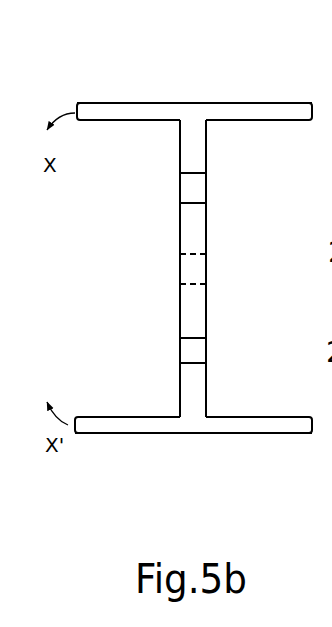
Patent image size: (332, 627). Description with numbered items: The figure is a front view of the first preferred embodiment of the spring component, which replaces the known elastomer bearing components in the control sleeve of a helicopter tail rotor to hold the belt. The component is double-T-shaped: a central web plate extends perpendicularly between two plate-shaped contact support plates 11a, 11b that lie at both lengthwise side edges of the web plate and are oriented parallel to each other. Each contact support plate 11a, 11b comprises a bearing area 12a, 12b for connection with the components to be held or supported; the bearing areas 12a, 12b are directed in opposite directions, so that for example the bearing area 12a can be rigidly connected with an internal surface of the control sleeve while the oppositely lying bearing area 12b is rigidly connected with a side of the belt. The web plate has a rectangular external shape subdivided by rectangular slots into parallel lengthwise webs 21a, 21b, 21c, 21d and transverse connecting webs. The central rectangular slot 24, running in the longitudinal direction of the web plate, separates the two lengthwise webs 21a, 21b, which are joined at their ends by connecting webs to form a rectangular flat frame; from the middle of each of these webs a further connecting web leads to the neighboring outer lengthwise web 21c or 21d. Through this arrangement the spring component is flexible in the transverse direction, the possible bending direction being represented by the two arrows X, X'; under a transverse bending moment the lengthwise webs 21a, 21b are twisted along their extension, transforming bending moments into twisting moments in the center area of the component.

The contact support plate 11a is at (141, 115).
The bearing area 12a is at (227, 102).
The contact support plate 11b is at (138, 426).
The bearing area 12b is at (244, 435).
The lengthwise web 21a is at (192, 220).
The lengthwise web 21b is at (193, 305).
The lengthwise web 21c is at (193, 145).
The lengthwise web 21d is at (193, 377).
The central rectangular slot 24 is at (190, 268).